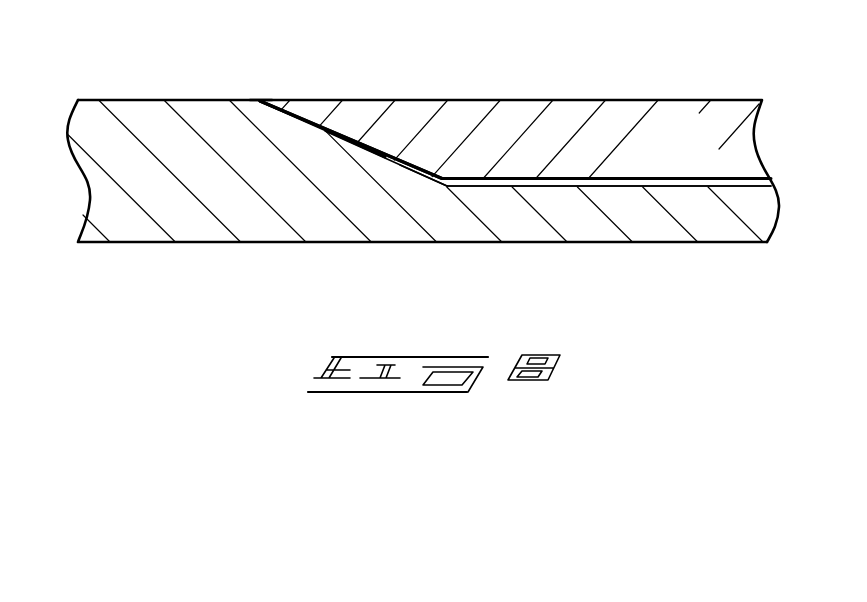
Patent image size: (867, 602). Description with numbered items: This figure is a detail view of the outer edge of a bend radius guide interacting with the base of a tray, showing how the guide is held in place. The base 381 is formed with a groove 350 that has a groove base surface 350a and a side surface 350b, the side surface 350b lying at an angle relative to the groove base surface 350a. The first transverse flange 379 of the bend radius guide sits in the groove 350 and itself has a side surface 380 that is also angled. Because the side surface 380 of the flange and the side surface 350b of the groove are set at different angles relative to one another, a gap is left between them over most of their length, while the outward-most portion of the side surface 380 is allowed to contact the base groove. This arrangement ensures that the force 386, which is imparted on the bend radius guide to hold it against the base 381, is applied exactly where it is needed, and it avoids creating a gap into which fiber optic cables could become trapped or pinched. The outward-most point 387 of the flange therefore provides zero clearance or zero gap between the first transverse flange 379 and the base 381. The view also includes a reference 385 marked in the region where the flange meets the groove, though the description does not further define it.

The groove 350 is at (493, 187).
The groove base surface 350a is at (551, 185).
The side surface 350b is at (407, 147).
The first transverse flange 379 is at (703, 165).
The side surface 380 is at (376, 169).
The base 381 is at (192, 222).
The layer thickness 385 is at (395, 228).
The force 386 is at (263, 88).
The outward-most point 387 is at (267, 99).